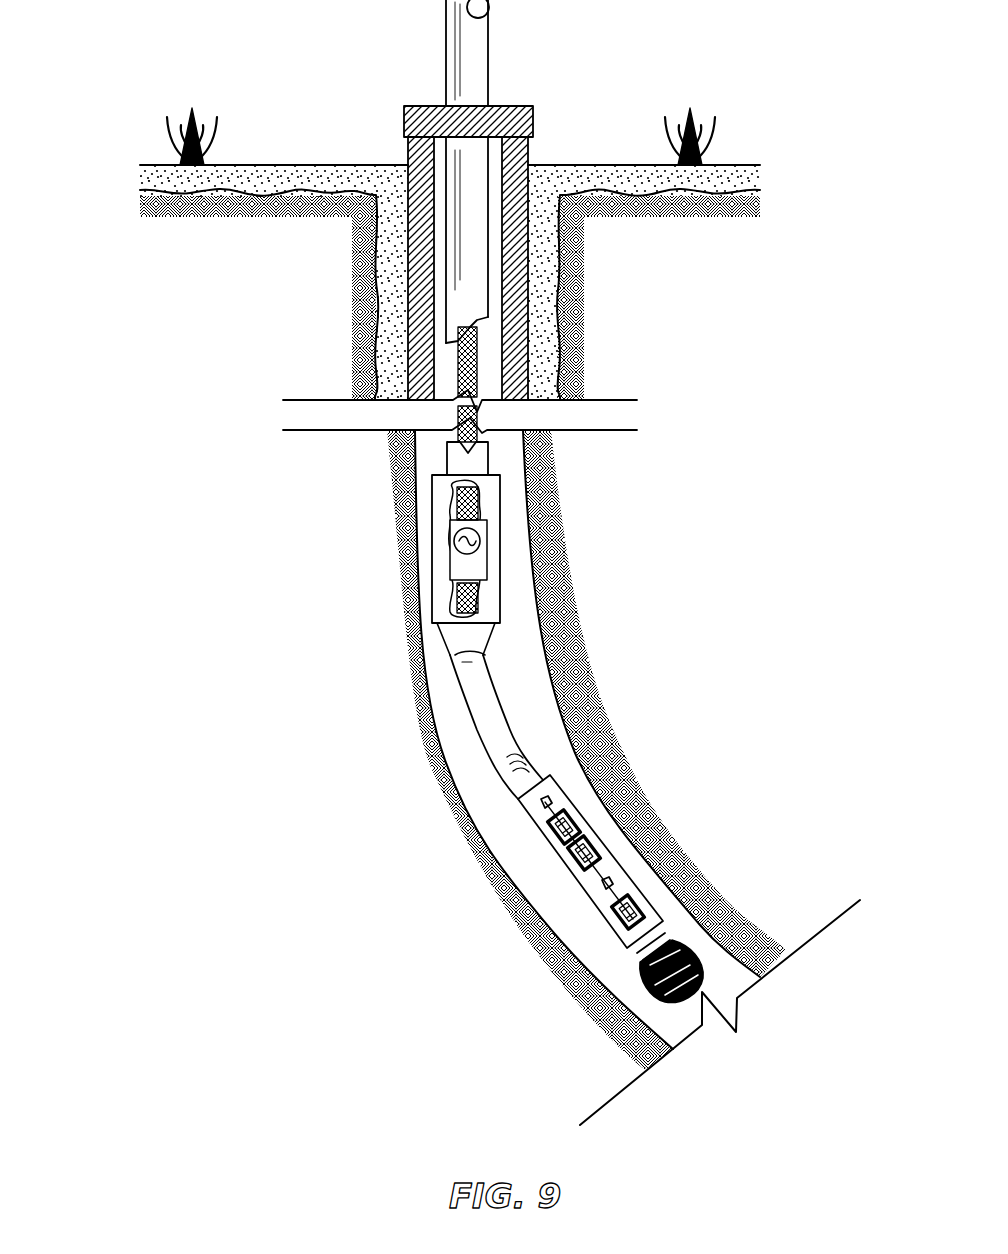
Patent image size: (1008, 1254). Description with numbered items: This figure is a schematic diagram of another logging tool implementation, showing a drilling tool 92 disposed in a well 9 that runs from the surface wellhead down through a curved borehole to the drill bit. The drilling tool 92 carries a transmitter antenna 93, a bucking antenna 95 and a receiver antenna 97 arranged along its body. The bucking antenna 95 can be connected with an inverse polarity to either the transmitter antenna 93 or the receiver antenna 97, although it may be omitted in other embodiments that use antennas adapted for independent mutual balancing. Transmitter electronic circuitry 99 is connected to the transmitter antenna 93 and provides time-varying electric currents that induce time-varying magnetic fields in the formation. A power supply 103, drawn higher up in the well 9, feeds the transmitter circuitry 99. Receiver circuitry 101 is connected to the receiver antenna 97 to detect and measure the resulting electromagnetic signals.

The well 9 is at (533, 150).
The power supply 103 is at (456, 566).
The transmitter electronic circuitry 99 is at (546, 799).
The drilling tool 92 is at (560, 855).
The receiver circuitry 101 is at (617, 890).
The transmitter antenna 93 is at (607, 807).
The bucking antenna 95 is at (597, 840).
The receiver antenna 97 is at (623, 920).